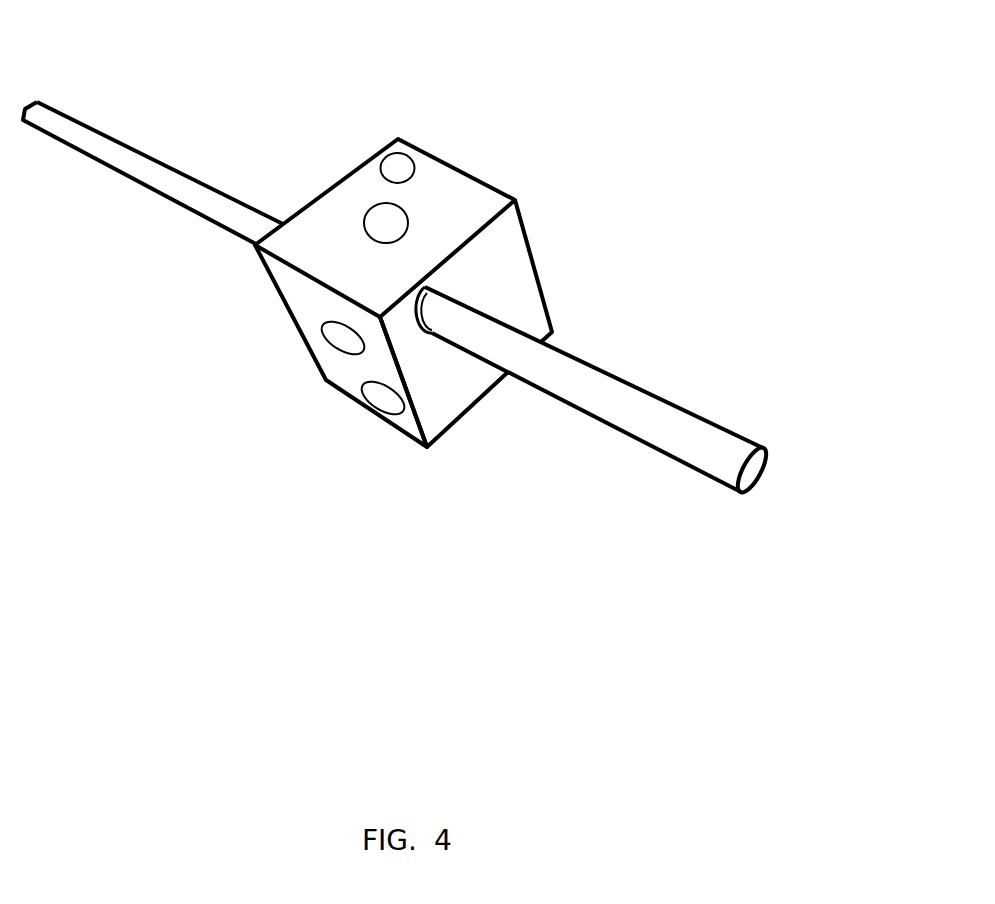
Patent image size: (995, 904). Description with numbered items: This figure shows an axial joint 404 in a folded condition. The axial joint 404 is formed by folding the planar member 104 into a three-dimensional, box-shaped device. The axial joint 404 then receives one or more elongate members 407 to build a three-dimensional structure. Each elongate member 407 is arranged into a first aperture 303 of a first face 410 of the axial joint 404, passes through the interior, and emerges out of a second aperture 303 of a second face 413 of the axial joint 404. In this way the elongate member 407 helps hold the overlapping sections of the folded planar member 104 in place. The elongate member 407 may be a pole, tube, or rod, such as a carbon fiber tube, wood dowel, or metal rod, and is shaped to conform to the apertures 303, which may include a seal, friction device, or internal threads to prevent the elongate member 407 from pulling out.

The axial joint 404 is at (430, 118).
The first face 410 is at (497, 277).
The second face 413 is at (266, 304).
The planar member 104 is at (316, 319).
The aperture 303 is at (421, 362).
The elongate member 407 is at (773, 462).